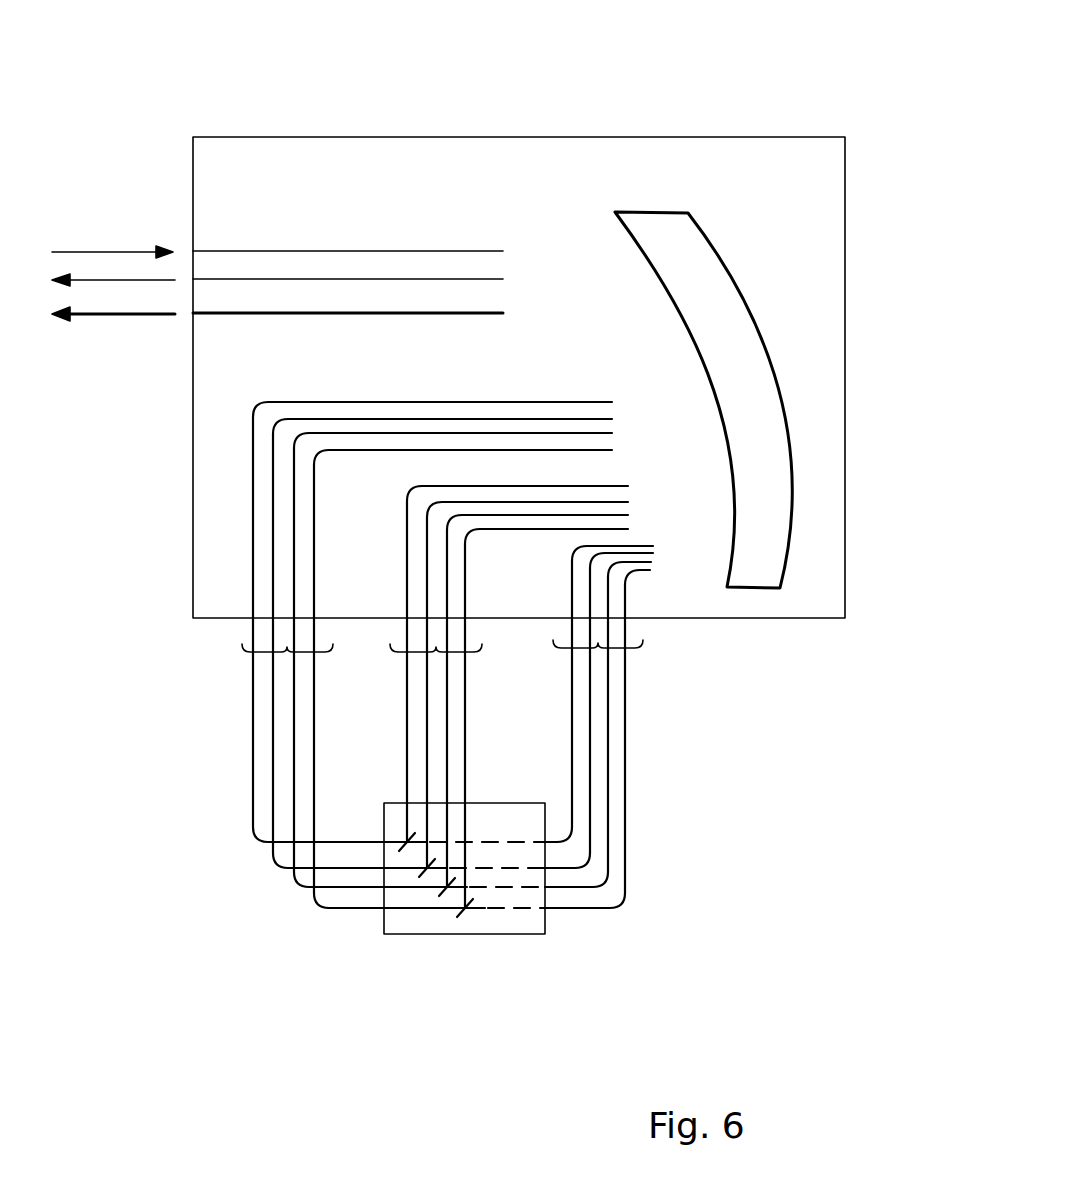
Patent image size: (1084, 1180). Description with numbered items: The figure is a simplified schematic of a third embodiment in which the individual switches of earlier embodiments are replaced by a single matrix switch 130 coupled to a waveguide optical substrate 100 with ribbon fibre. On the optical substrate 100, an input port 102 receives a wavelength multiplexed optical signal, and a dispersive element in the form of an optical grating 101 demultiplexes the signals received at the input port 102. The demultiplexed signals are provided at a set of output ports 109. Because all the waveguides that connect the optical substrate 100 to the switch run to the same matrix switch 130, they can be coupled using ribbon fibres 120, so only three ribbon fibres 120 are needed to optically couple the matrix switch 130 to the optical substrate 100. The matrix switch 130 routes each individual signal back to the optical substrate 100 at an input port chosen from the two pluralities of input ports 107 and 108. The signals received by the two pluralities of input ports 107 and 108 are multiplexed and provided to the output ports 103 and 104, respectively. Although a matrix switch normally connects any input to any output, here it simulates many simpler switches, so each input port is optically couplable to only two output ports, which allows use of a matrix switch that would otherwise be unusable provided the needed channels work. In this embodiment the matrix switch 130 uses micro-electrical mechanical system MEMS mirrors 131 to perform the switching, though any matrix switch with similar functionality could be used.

The optical substrate 100 is at (797, 165).
The optical grating 101 is at (702, 243).
The input port 102 is at (195, 250).
The output port 103 is at (195, 278).
The output port 104 is at (195, 313).
The first plurality of input ports 107 is at (437, 651).
The second plurality of input ports 108 is at (598, 648).
The set of output ports 109 is at (290, 651).
The ribbon fibres 120 is at (443, 655).
The matrix switch 130 is at (522, 934).
The MEMS mirrors 131 is at (453, 883).